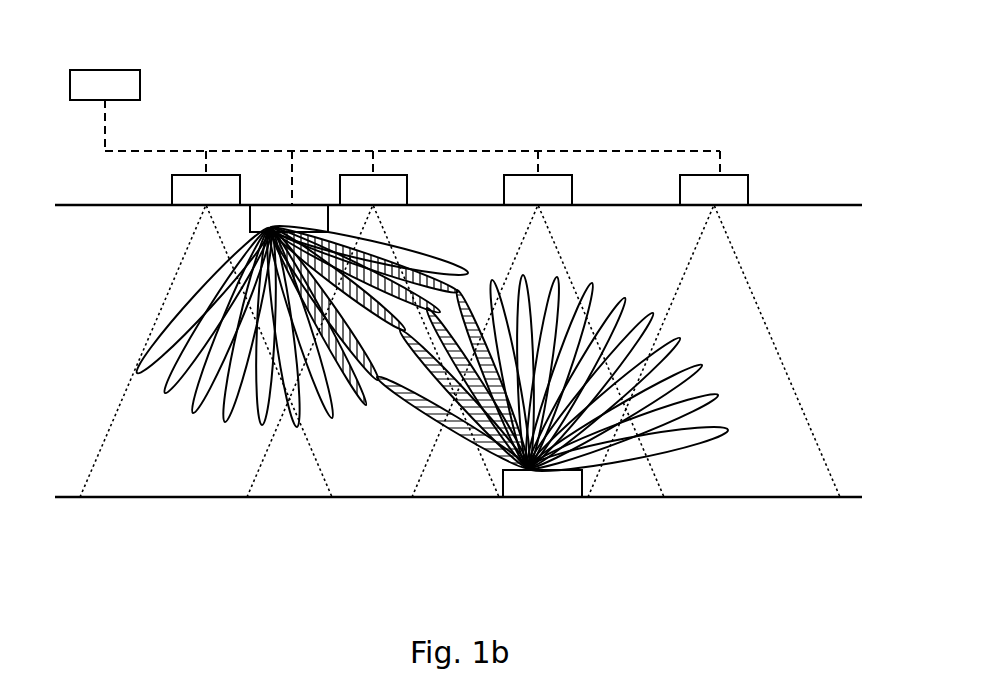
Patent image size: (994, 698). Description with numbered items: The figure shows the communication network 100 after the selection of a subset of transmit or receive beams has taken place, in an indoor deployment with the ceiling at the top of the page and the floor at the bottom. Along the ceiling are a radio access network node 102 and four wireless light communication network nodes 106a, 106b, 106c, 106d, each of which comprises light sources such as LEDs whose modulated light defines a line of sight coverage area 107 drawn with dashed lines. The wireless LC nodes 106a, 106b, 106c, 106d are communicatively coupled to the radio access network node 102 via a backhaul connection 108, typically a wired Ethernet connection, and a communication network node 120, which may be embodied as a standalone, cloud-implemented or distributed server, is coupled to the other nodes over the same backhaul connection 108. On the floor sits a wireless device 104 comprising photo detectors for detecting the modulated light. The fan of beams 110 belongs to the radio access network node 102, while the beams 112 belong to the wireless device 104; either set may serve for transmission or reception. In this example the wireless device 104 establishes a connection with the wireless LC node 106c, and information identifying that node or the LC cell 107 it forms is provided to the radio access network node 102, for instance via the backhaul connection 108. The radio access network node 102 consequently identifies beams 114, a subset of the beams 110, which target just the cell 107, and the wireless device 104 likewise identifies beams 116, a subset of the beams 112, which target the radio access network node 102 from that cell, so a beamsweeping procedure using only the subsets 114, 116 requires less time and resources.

The communication network 100 is at (898, 38).
The radio access network node 102 is at (300, 216).
The wireless device 104 is at (538, 483).
The wireless light communication network node 106a is at (190, 175).
The wireless light communication network node 106b is at (386, 175).
The wireless light communication network node 106c is at (554, 175).
The wireless light communication network node 106d is at (737, 175).
The coverage area 107 is at (777, 348).
The backhaul connection 108 is at (652, 150).
The beams 110 is at (213, 272).
The beams 112 is at (700, 450).
The beams 114 is at (360, 403).
The beams 116 is at (463, 443).
The communication network node 120 is at (92, 68).